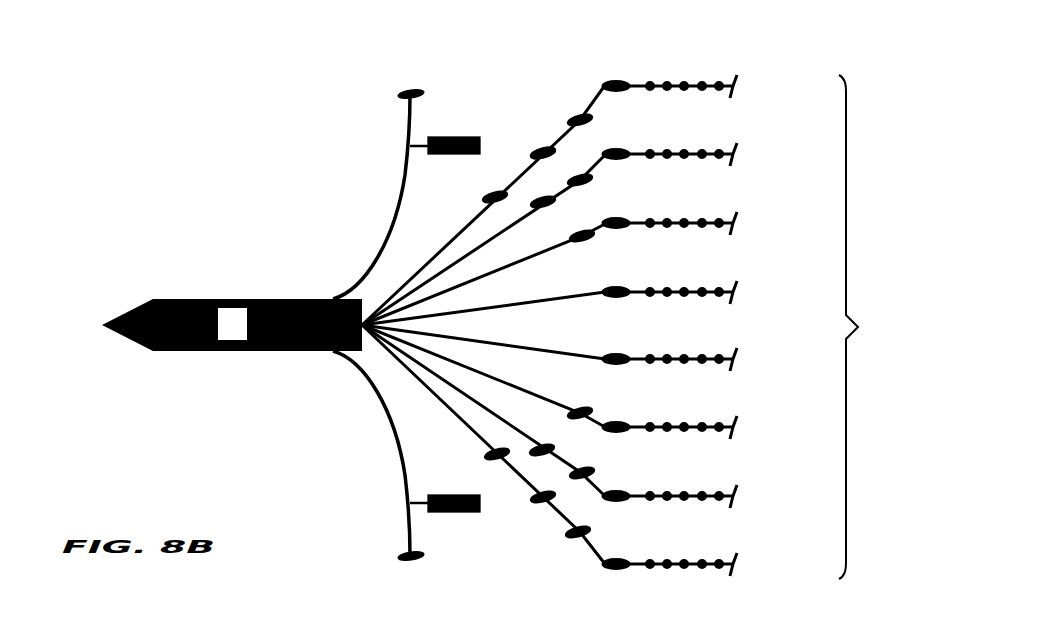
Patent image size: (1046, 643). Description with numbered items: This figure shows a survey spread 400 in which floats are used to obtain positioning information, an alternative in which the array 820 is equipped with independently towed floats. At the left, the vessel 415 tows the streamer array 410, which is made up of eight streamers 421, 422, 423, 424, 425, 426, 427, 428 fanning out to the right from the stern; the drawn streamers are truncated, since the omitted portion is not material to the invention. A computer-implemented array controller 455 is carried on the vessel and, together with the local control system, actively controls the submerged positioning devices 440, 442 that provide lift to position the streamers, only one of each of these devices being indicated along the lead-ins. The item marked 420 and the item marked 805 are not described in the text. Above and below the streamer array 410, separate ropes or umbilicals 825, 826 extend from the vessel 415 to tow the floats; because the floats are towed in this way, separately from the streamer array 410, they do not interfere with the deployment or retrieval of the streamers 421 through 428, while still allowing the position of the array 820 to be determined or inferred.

The survey spread 400 is at (112, 171).
The array 820 is at (298, 184).
The survey vessel 420 is at (196, 324).
The vessel 415 is at (172, 353).
The array controller 455 is at (232, 318).
The separate rope or umbilical 825 is at (378, 248).
The separate rope or umbilical 826 is at (376, 396).
The buoy with source 805 is at (448, 137).
The submerged positioning device 440 is at (540, 149).
The submerged positioning device 442 is at (604, 82).
The streamer 421 is at (577, 180).
The streamer 422 is at (728, 148).
The streamer 423 is at (728, 217).
The streamer 424 is at (728, 286).
The streamer 425 is at (728, 365).
The streamer 426 is at (728, 433).
The streamer 427 is at (728, 502).
The streamer 428 is at (728, 570).
The streamer array 410 is at (880, 327).